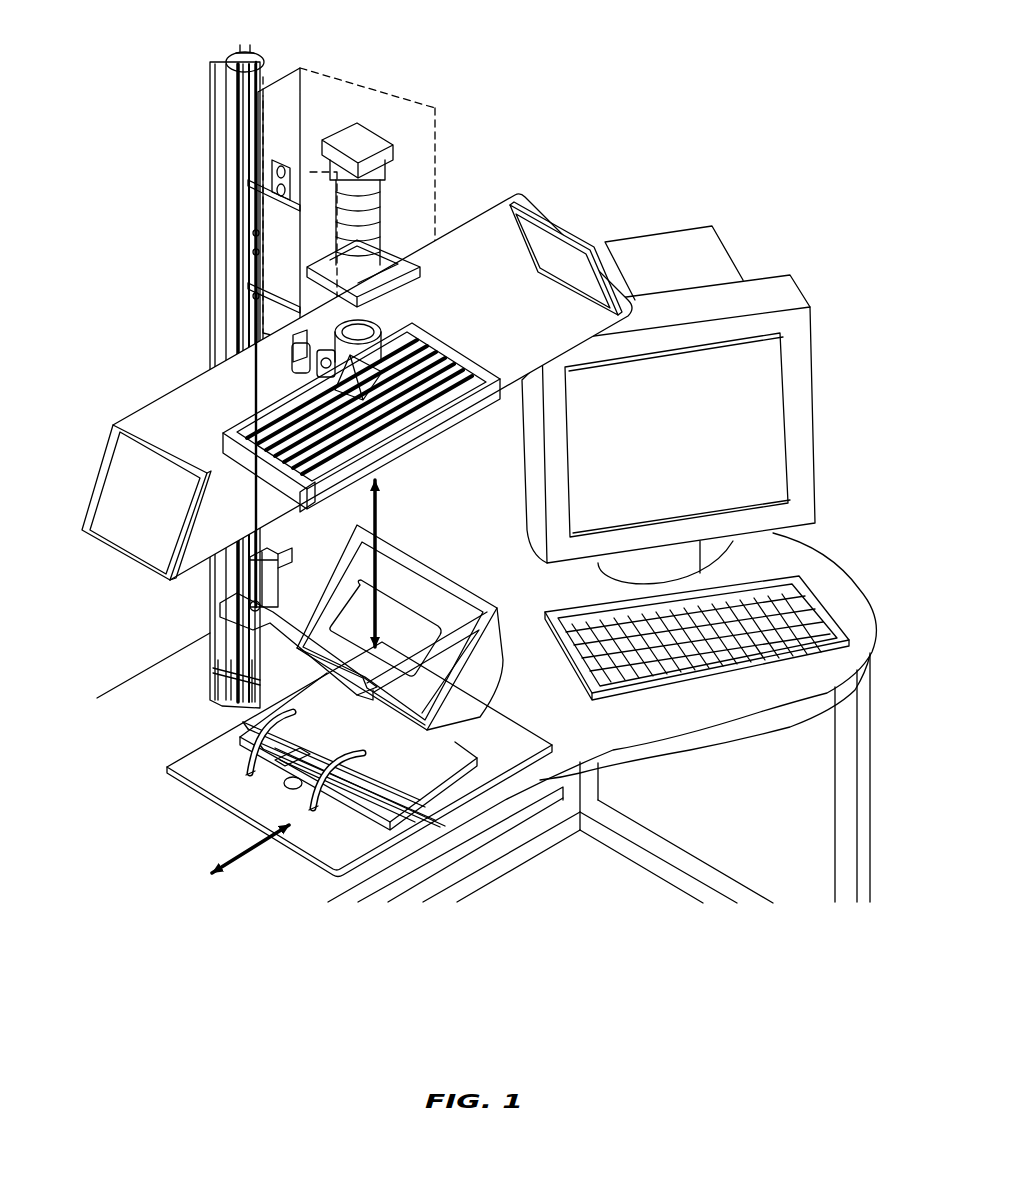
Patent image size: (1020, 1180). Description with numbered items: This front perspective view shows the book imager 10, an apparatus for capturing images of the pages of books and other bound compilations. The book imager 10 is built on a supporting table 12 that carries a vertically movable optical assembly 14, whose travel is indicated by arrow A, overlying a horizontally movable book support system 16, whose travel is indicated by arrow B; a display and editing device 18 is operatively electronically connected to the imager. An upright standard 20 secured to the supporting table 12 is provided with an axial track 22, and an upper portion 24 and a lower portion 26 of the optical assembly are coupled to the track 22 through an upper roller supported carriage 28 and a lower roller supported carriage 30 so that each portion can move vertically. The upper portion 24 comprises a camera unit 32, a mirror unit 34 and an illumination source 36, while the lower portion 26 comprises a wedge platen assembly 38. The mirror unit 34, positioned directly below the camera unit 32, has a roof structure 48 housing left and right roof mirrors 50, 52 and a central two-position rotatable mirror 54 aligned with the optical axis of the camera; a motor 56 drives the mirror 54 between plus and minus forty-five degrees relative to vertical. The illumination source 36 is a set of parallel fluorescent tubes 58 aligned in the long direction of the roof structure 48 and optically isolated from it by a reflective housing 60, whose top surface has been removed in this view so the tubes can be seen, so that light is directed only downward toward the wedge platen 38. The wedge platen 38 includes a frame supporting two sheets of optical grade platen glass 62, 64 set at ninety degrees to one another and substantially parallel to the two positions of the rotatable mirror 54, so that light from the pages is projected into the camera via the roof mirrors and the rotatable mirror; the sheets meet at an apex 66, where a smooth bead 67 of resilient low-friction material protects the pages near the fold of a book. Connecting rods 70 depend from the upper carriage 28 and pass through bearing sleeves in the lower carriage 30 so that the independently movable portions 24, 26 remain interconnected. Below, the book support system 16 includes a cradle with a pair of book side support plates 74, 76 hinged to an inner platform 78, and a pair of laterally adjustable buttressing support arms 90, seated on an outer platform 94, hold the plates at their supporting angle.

The book imager 10 is at (538, 82).
The supporting table 12 is at (805, 570).
The vertically movable optical assembly 14 is at (270, 389).
The horizontally movable book support system 16 is at (218, 713).
The display and editing device 18 is at (797, 303).
The upright standard 20 is at (228, 150).
The axial track 22 is at (262, 62).
The upper portion of the optical assembly 24 is at (342, 350).
The lower portion of the optical assembly 26 is at (405, 623).
The upper roller supported carriage 28 is at (270, 252).
The lower roller supported carriage 30 is at (270, 579).
The camera unit 32 is at (398, 167).
The mirror unit 34 is at (570, 242).
The illumination source 36 is at (371, 413).
The wedge platen assembly 38 is at (413, 567).
The roof structure 48 is at (175, 405).
The left roof mirror 50 is at (135, 472).
The right roof mirror 52 is at (558, 247).
The central two-position rotatable mirror 54 is at (328, 392).
The motor 56 is at (292, 352).
The parallel fluorescent tubes 58 is at (390, 407).
The reflective housing 60 is at (268, 468).
The platen glass 62 is at (210, 633).
The platen glass 64 is at (447, 603).
The apex 66 is at (398, 751).
The smooth bead 67 is at (447, 757).
The connecting rods 70 is at (285, 535).
The book side support plate 74 is at (443, 790).
The book side support plate 76 is at (552, 744).
The inner platform 78 is at (385, 771).
The buttressing support arms 90 is at (305, 768).
The outer platform 94 is at (205, 770).